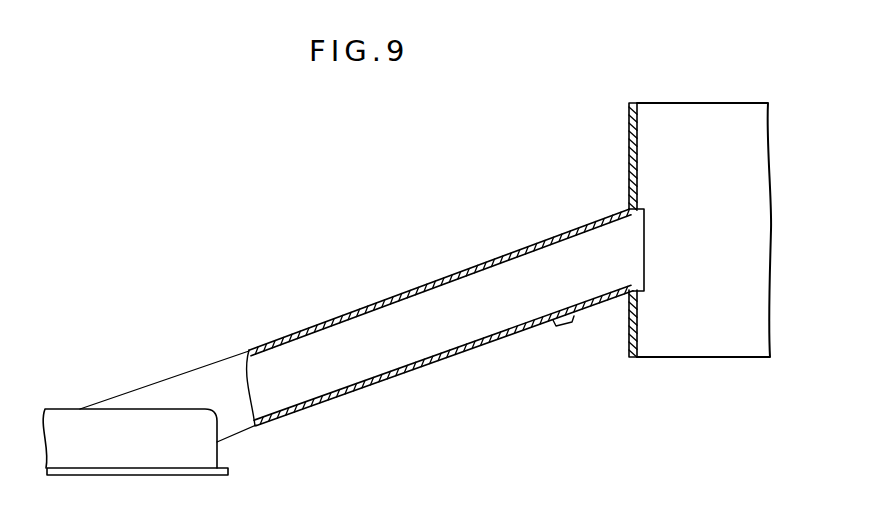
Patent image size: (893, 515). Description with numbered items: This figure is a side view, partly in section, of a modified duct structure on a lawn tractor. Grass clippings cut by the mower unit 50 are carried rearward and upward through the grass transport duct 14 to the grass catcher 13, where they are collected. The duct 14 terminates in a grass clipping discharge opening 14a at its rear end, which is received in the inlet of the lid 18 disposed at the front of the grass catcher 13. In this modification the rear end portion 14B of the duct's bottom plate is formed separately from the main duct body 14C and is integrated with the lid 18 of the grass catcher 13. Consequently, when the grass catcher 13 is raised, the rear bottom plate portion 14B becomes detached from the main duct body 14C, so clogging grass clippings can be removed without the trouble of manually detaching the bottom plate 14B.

The grass catcher 13 is at (695, 103).
The lid 18 is at (628, 140).
The grass transport duct 14 is at (403, 310).
The grass clipping discharge opening 14a is at (647, 252).
The rear end portion of bottom plate 14B is at (598, 301).
The main duct body 14C is at (342, 316).
The mower unit 50 is at (62, 408).